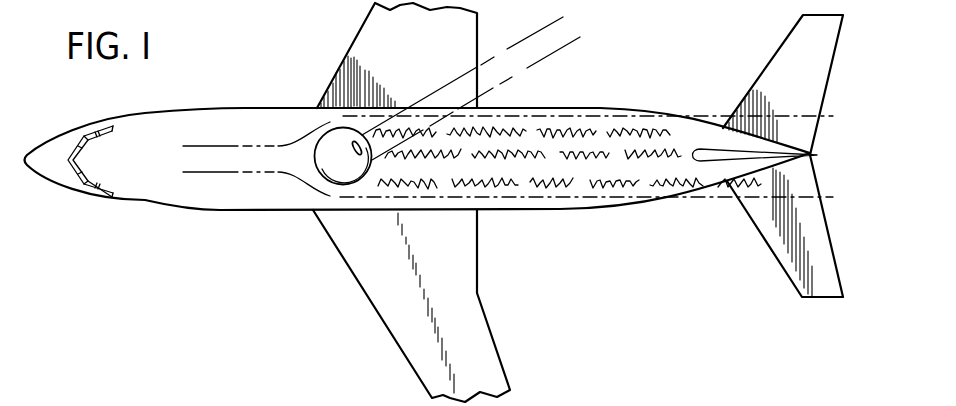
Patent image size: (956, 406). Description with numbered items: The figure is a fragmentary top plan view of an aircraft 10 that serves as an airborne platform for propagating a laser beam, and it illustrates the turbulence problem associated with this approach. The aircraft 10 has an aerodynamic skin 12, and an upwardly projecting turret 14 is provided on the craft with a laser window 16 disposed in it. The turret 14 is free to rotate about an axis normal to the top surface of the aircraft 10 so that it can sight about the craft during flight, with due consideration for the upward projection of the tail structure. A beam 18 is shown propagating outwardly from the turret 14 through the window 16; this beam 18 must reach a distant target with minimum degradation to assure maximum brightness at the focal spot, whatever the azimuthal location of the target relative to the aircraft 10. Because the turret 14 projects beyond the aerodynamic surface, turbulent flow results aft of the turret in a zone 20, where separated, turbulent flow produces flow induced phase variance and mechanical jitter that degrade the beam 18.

The aircraft 10 is at (209, 212).
The aerodynamic skin 12 is at (245, 108).
The turret 14 is at (328, 164).
The laser window 16 is at (352, 147).
The beam 18 is at (538, 49).
The zone of turbulent flow 20 is at (571, 168).